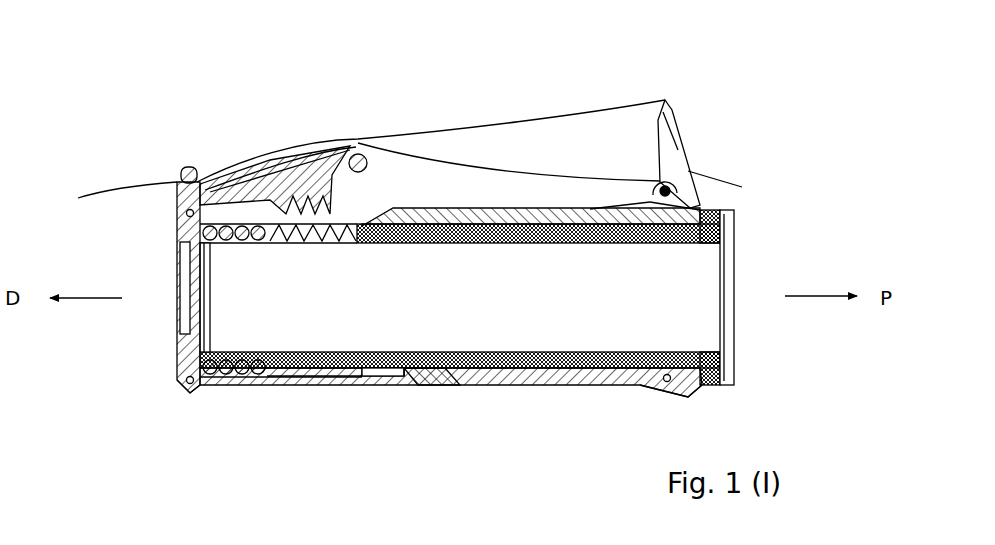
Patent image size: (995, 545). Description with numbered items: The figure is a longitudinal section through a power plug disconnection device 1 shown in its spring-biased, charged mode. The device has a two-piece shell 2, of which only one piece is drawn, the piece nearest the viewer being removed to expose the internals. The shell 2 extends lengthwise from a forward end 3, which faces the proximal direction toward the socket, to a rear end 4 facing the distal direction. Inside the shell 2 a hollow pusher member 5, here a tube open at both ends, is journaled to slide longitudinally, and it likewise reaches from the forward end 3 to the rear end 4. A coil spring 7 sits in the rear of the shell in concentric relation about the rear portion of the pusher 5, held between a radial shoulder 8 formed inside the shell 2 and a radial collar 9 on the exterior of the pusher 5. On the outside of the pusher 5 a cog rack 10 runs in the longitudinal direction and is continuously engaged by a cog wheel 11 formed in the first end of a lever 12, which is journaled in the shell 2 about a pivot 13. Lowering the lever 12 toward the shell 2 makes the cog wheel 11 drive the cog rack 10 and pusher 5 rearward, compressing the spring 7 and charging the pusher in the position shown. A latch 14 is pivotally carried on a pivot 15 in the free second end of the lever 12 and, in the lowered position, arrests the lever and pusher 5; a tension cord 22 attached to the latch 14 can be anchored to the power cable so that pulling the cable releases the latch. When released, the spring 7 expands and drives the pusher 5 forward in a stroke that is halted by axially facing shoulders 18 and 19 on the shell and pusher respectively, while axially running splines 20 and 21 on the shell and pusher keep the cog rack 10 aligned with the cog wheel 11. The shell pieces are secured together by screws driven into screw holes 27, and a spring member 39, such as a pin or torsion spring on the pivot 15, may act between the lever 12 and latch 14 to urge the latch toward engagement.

The power plug disconnection device 1 is at (250, 88).
The two-piece shell 2 is at (575, 388).
The forward end 3 is at (761, 304).
The rear end 4 is at (158, 306).
The hollow pusher member 5 is at (590, 355).
The coil spring 7 is at (240, 360).
The radial shoulder 8 is at (235, 238).
The radial collar 9 is at (273, 372).
The cog rack 10 is at (333, 238).
The cog wheel 11 is at (320, 204).
The lever 12 is at (450, 162).
The pivot 13 is at (366, 152).
The latch 14 is at (664, 124).
The pivot 15 is at (657, 186).
The shoulder 18 is at (365, 370).
The shoulder 19 is at (447, 370).
The spline 20 is at (318, 378).
The spline 21 is at (420, 358).
The tension cord 22 is at (110, 188).
The screw holes 27 is at (174, 387).
The spring member 39 is at (733, 187).